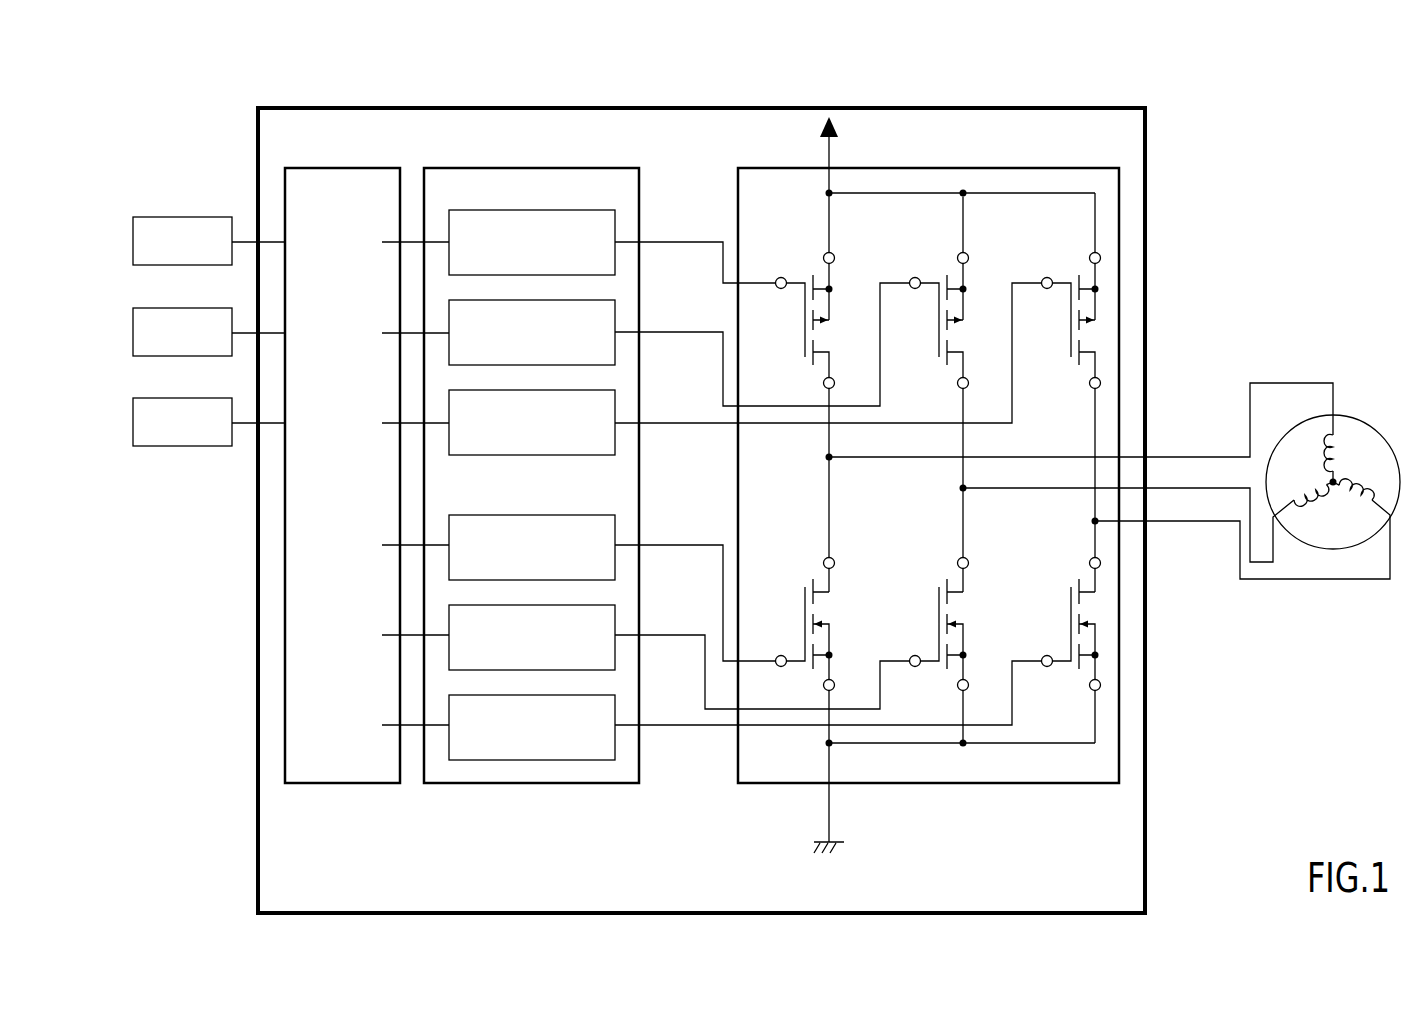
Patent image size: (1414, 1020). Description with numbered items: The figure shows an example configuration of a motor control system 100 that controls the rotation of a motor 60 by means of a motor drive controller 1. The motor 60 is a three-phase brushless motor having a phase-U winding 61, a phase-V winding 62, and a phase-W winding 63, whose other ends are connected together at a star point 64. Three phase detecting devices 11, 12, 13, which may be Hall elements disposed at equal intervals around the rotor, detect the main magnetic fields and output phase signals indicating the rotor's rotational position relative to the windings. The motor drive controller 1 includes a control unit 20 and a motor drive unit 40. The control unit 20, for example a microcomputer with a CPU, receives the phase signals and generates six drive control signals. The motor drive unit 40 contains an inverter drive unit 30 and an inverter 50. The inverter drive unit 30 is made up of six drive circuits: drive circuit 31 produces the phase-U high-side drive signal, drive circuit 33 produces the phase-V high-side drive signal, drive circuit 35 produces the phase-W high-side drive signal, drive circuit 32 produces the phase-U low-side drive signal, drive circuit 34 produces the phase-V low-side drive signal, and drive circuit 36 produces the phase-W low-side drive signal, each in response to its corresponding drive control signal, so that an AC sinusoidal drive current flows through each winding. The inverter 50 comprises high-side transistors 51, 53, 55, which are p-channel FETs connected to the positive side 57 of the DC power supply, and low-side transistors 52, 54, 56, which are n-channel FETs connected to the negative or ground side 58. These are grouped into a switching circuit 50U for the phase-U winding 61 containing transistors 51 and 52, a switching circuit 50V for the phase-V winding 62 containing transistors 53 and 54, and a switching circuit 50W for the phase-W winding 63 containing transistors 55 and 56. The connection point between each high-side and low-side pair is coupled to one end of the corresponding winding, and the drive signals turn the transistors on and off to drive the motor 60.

The motor control system 100 is at (1328, 146).
The motor drive controller 1 is at (1147, 140).
The phase detecting device 11 is at (183, 217).
The phase detecting device 12 is at (183, 308).
The phase detecting device 13 is at (183, 398).
The control unit 20 is at (344, 168).
The inverter drive unit 30 is at (565, 168).
The drive circuit 31 is at (555, 210).
The drive circuit 32 is at (555, 515).
The drive circuit 33 is at (555, 300).
The drive circuit 34 is at (555, 605).
The drive circuit 35 is at (555, 390).
The drive circuit 36 is at (555, 695).
The motor drive unit 40 is at (1118, 852).
The inverter 50 is at (1030, 168).
The switching circuit 50U is at (781, 256).
The switching circuit 50V is at (913, 256).
The switching circuit 50W is at (1045, 256).
The transistor 51 is at (812, 283).
The transistor 52 is at (811, 586).
The transistor 53 is at (946, 283).
The transistor 54 is at (945, 586).
The transistor 55 is at (1078, 283).
The transistor 56 is at (1077, 586).
The positive side of the DC power supply 57 is at (820, 128).
The negative side of the DC power supply 58 is at (838, 840).
The motor 60 is at (1345, 418).
The phase-U winding 61 is at (1340, 448).
The phase-V winding 62 is at (1306, 492).
The phase-W winding 63 is at (1350, 500).
The star point 64 is at (1341, 481).